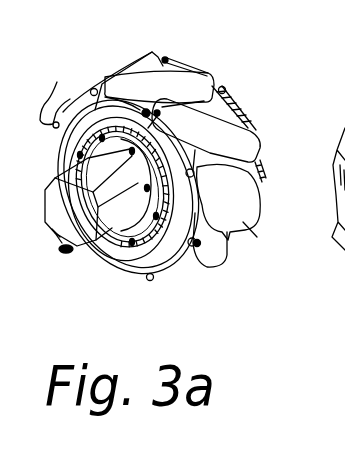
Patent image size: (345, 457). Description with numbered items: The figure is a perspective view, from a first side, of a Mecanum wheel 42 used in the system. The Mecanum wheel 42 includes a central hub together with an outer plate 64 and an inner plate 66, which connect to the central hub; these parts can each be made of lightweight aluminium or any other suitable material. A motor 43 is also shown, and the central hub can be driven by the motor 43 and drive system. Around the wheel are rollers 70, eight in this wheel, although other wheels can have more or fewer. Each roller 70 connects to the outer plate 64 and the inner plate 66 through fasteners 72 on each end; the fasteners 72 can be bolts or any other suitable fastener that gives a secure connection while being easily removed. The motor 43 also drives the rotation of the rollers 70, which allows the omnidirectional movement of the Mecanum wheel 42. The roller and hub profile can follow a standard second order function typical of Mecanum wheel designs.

The Mecanum wheel 42 is at (79, 64).
The motor 43 is at (97, 248).
The outer plate 64 is at (235, 108).
The inner plate 66 is at (148, 276).
The roller 70 is at (243, 222).
The fastener 72 is at (92, 92).